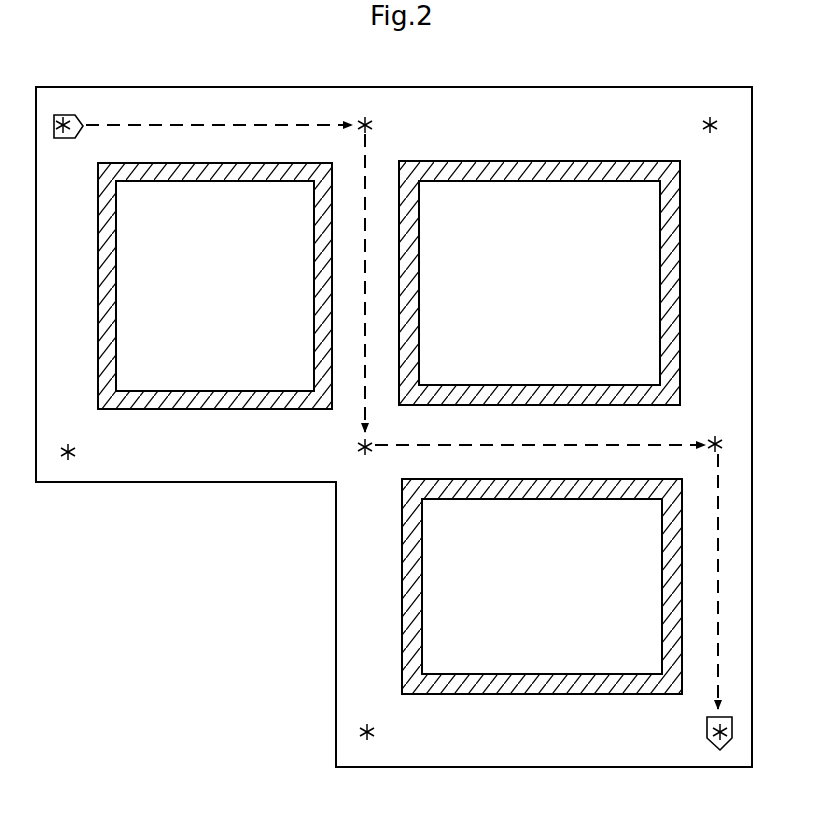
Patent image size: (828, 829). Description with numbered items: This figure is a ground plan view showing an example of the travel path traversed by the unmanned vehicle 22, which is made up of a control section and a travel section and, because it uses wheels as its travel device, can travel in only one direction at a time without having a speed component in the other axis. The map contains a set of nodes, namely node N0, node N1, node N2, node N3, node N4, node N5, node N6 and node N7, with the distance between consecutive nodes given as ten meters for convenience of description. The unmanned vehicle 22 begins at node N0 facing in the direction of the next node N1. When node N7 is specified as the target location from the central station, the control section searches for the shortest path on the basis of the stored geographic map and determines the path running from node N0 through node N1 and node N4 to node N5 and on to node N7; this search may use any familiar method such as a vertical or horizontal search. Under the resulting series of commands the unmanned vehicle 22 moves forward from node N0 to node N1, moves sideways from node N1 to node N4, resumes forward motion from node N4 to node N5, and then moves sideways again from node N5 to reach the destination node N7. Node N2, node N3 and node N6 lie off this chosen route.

The unmanned vehicle 22 is at (64, 139).
The node N0 is at (65, 112).
The node N1 is at (365, 112).
The node N2 is at (710, 112).
The node N3 is at (68, 441).
The node N4 is at (367, 461).
The node N5 is at (715, 432).
The node N6 is at (368, 720).
The node N7 is at (703, 729).